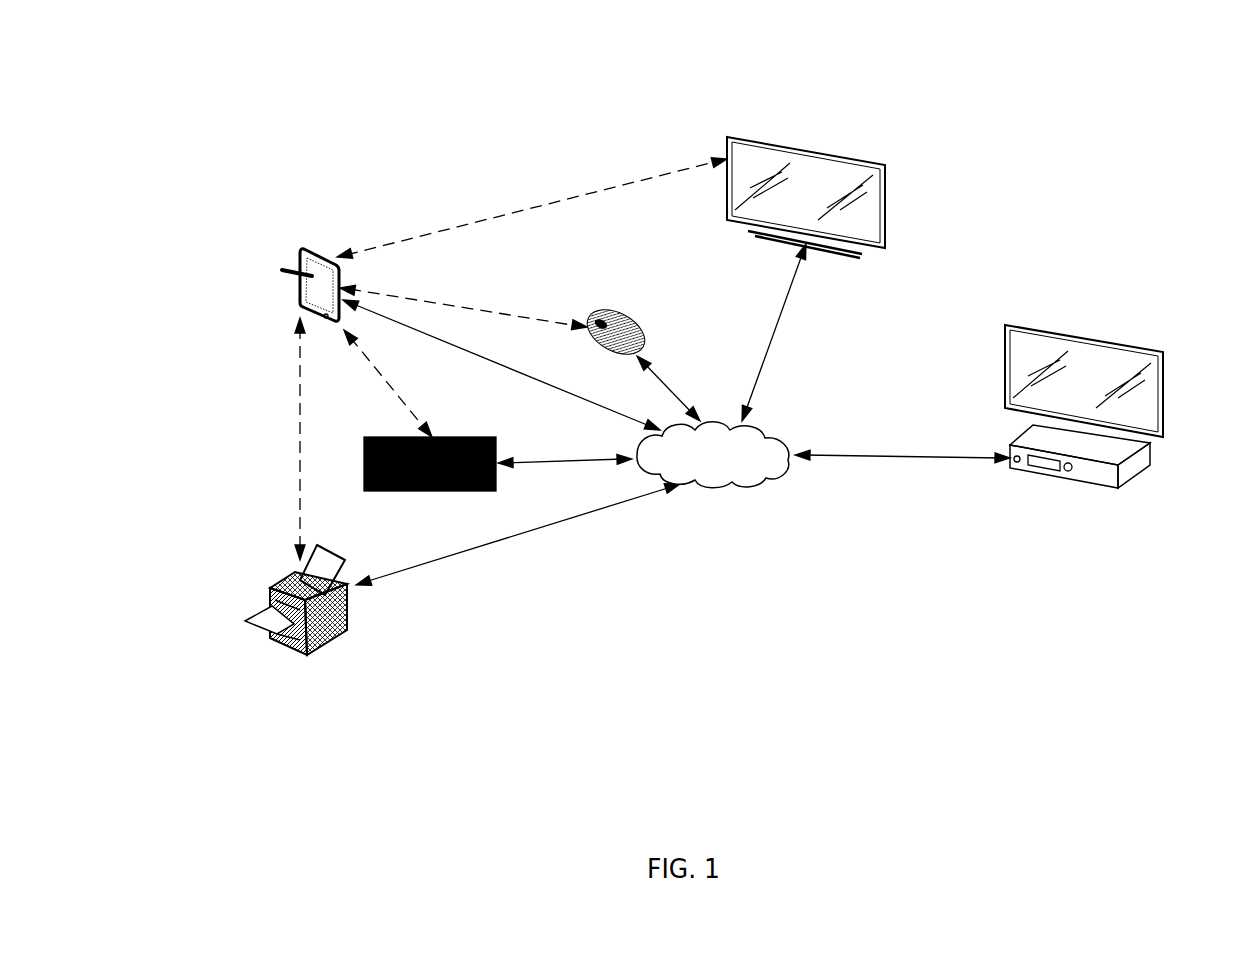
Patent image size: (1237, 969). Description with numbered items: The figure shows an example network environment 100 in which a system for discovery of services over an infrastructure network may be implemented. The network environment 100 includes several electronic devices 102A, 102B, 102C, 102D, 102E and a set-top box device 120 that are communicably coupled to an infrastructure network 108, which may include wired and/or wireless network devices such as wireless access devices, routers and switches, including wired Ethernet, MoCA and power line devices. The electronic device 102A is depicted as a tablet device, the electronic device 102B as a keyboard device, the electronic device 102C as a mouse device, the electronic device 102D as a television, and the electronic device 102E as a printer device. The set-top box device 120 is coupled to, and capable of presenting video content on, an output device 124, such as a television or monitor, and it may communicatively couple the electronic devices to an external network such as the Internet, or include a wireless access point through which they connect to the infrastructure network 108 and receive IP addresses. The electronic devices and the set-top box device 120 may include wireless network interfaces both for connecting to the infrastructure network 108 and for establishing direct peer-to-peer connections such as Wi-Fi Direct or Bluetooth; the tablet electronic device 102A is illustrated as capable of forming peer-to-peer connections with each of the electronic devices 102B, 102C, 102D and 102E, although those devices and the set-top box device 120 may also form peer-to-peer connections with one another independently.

The network environment 100 is at (1143, 72).
The electronic device 102A is at (300, 252).
The electronic device 102B is at (470, 437).
The electronic device 102C is at (614, 315).
The electronic device 102D is at (812, 150).
The electronic device 102E is at (266, 588).
The infrastructure network 108 is at (742, 488).
The set-top box device 120 is at (1130, 462).
The output device 124 is at (1104, 341).